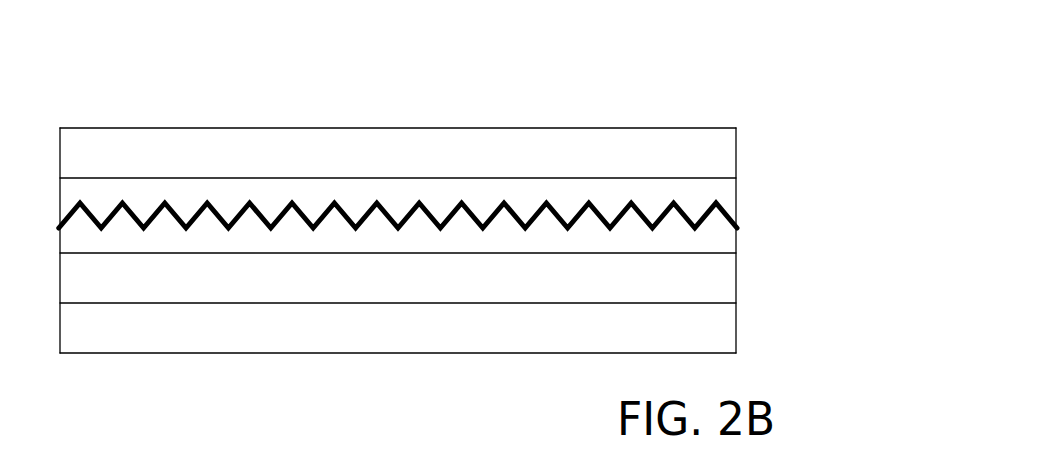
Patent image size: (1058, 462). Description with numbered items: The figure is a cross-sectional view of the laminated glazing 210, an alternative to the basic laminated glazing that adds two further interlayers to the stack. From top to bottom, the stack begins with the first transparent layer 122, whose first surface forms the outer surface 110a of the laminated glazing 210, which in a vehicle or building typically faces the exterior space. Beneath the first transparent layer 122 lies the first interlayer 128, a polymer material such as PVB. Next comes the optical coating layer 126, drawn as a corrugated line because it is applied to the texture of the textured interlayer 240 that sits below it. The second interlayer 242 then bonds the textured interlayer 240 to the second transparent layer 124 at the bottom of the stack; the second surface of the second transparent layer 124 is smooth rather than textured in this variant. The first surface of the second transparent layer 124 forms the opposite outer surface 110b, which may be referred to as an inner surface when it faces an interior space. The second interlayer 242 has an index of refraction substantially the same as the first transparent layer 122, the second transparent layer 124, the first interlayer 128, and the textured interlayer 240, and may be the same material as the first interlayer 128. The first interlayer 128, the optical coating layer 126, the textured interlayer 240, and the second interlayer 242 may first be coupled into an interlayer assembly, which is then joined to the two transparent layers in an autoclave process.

The laminated glazing 210 is at (727, 101).
The outer surface 110a is at (522, 128).
The outer surface 110b is at (202, 353).
The first transparent layer 122 is at (736, 160).
The interlayer 128 is at (736, 184).
The optical coating layer 126 is at (736, 208).
The textured interlayer 240 is at (736, 232).
The second interlayer 242 is at (736, 268).
The second transparent layer 124 is at (736, 318).